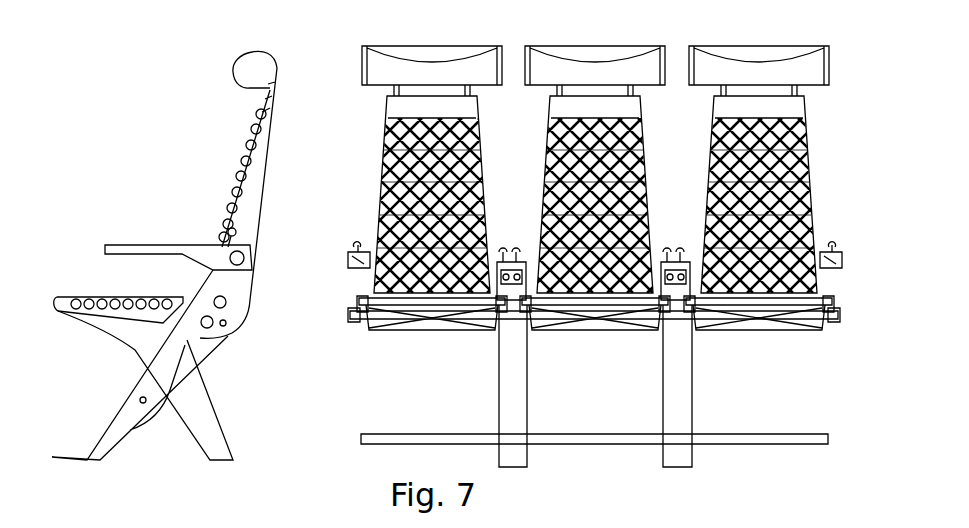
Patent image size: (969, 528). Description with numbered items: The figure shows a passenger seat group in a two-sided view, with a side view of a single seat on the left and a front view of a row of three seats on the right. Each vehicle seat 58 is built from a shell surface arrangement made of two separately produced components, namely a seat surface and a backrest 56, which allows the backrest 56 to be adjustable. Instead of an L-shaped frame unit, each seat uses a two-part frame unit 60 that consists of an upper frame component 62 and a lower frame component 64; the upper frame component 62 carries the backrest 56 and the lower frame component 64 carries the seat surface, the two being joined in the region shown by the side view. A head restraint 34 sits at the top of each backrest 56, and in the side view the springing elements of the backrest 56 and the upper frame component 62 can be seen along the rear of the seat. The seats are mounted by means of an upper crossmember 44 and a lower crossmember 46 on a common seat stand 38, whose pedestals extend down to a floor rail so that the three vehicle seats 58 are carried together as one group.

The head restraint 34 is at (258, 74).
The seat stand 38 is at (702, 392).
The upper crossmember 44 is at (697, 262).
The lower crossmember 46 is at (826, 300).
The backrest 56 is at (252, 214).
The vehicle seat 58 is at (198, 151).
The two-part frame unit 60 is at (257, 323).
The upper frame component 62 is at (260, 185).
The lower frame component 64 is at (110, 295).